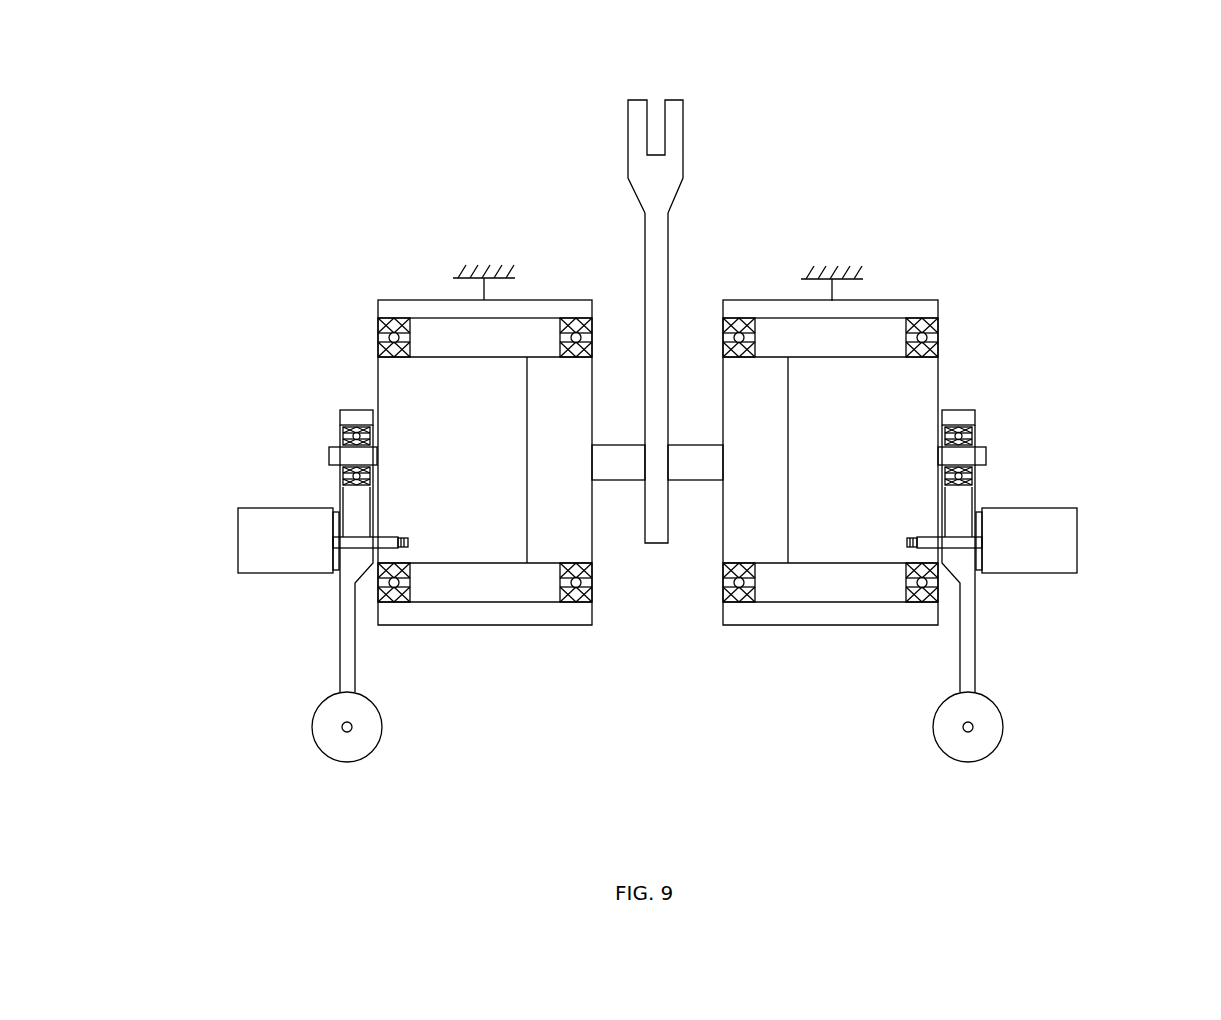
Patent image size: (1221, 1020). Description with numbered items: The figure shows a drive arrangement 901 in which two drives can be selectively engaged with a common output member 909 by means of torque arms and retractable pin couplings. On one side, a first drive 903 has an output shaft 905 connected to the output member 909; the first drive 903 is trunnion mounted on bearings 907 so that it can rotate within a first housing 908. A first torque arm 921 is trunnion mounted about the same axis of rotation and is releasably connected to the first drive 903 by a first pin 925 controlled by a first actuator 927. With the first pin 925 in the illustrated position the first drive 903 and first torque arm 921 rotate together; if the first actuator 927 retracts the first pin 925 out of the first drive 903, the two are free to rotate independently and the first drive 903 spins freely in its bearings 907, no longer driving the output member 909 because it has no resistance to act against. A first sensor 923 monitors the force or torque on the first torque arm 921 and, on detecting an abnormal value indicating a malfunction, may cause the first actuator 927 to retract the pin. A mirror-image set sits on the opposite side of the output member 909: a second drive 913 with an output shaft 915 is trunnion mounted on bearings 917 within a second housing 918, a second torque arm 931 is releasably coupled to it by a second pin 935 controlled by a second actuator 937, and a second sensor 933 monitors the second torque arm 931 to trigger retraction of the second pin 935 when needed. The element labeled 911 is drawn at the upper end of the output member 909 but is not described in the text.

The drive arrangement 901 is at (903, 147).
The first drive 903 is at (377, 385).
The output shaft 905 is at (622, 482).
The bearings 907 is at (378, 328).
The first housing 908 is at (423, 300).
The output member 909 is at (670, 218).
The fork end 911 is at (687, 125).
The second drive 913 is at (938, 372).
The output shaft 915 is at (688, 482).
The bearings 917 is at (723, 320).
The second housing 918 is at (900, 300).
The first torque arm 921 is at (338, 652).
The first sensor 923 is at (320, 753).
The first pin 925 is at (392, 533).
The first actuator 927 is at (238, 545).
The second torque arm 931 is at (978, 635).
The second sensor 933 is at (1000, 740).
The second pin 935 is at (930, 533).
The second actuator 937 is at (1078, 528).